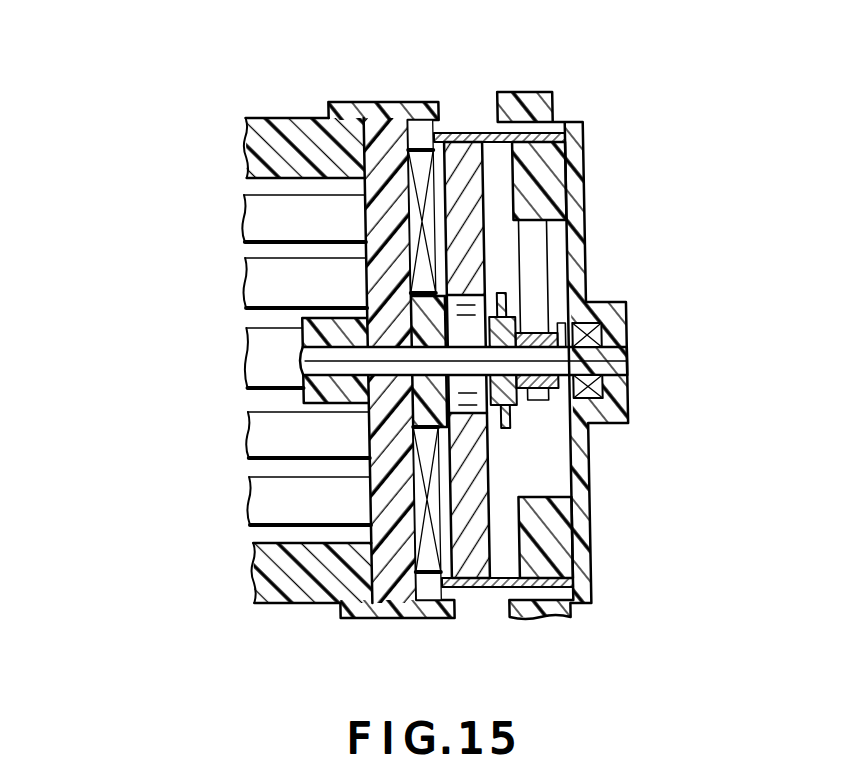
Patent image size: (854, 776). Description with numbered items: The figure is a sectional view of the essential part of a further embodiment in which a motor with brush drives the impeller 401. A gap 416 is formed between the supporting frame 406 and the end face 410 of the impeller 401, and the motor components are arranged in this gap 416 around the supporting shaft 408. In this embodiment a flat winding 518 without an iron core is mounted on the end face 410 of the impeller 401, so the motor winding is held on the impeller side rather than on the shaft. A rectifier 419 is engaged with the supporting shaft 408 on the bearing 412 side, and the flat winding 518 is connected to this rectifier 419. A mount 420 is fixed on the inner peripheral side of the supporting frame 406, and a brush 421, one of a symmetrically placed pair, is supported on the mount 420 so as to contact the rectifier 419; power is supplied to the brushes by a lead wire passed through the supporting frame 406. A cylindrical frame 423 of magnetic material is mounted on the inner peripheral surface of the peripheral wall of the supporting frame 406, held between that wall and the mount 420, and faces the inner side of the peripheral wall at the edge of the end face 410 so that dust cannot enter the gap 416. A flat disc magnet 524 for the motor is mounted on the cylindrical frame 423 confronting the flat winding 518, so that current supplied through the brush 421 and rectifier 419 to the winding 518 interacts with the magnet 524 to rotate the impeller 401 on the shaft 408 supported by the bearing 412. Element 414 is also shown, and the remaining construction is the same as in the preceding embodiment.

The impeller 401 is at (294, 135).
The supporting frame 406 is at (588, 124).
The supporting shaft 408 is at (318, 353).
The end face of the impeller 410 is at (412, 128).
The bearing 412 is at (603, 388).
The housing wall 414 is at (626, 424).
The gap 416 is at (506, 148).
The rectifier 419 is at (521, 392).
The mount 420 is at (570, 240).
The brush 421 is at (543, 290).
The cylindrical frame 423 is at (480, 133).
The flat winding 518 is at (418, 223).
The flat disc magnet 524 is at (474, 587).